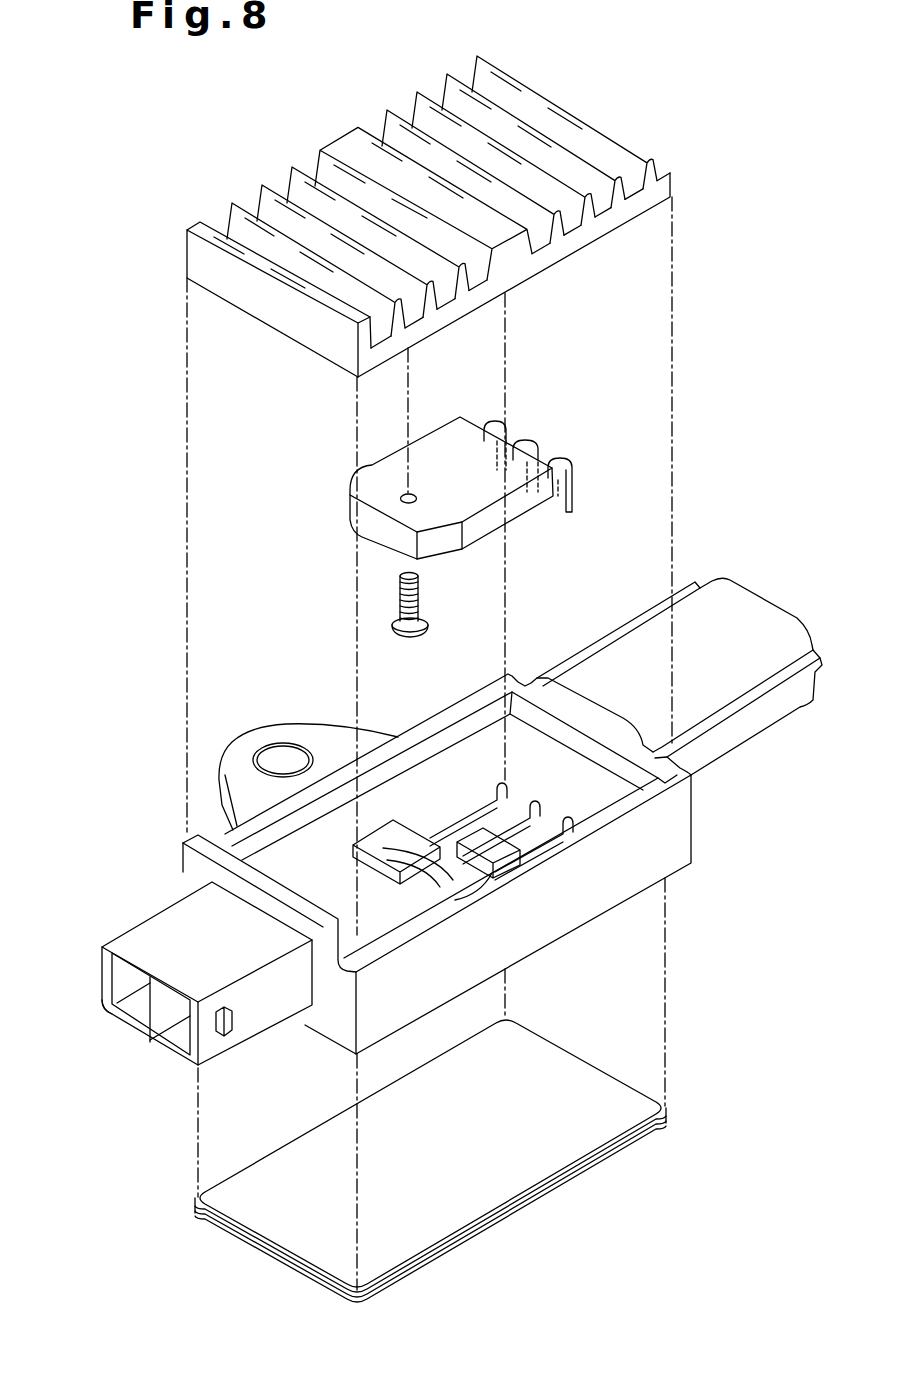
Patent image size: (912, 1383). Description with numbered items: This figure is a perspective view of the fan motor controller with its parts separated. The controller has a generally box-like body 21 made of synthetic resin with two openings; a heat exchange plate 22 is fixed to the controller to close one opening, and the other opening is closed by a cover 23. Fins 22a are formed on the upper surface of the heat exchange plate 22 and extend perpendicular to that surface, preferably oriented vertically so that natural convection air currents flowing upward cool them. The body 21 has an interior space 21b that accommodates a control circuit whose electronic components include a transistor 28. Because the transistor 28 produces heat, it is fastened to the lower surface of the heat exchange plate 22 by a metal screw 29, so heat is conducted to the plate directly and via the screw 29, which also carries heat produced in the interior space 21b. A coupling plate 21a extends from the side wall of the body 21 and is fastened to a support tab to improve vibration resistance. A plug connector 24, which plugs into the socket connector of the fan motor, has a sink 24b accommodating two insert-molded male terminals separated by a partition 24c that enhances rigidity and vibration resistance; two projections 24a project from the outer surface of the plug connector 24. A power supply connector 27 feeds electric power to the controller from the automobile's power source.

The body 21 is at (441, 818).
The coupling plate 21a is at (256, 741).
The interior space 21b is at (545, 753).
The heat exchange plate 22 is at (428, 193).
The fins 22a is at (413, 100).
The cover 23 is at (548, 1163).
The plug connector 24 is at (168, 970).
The projections 24a is at (233, 1020).
The sink 24b is at (115, 988).
The partition 24c is at (163, 998).
The power supply connector 27 is at (755, 610).
The transistor 28 is at (530, 502).
The metal screw 29 is at (428, 626).